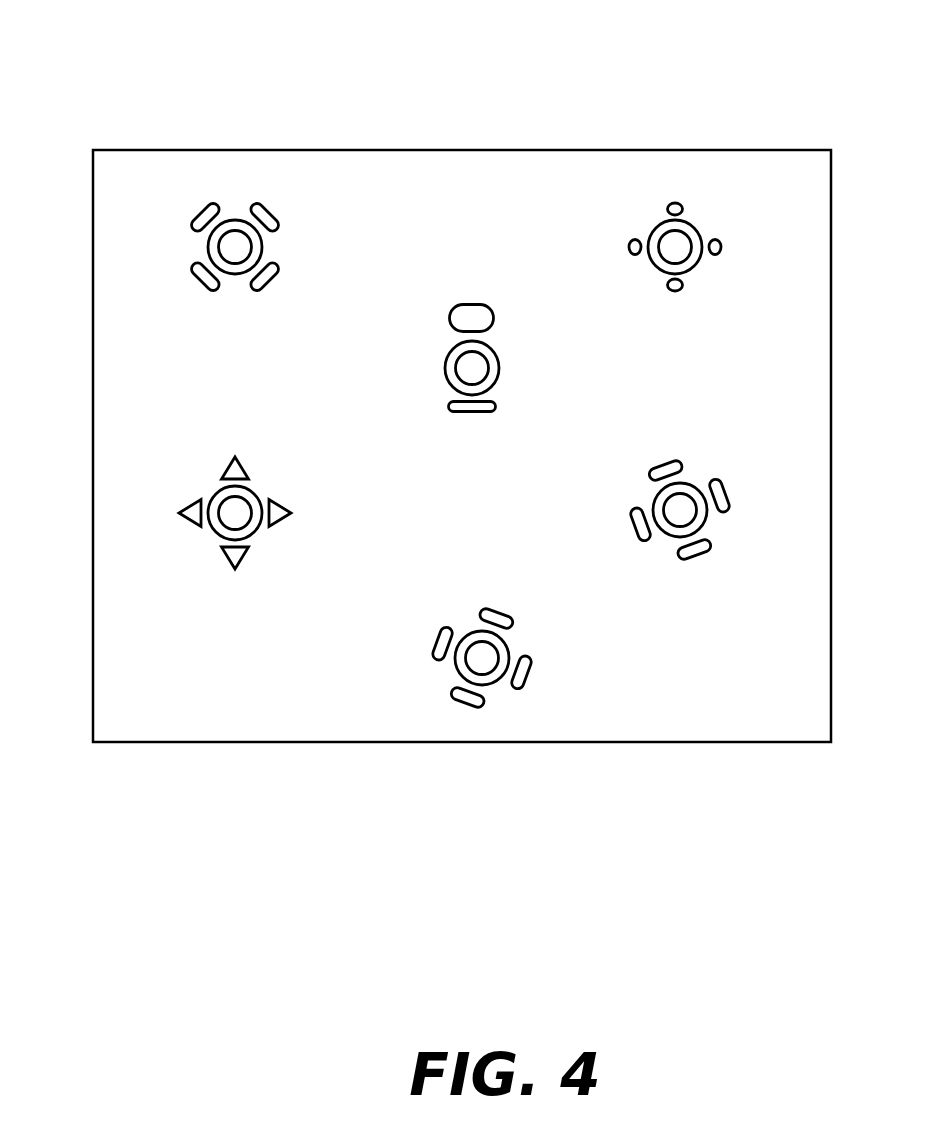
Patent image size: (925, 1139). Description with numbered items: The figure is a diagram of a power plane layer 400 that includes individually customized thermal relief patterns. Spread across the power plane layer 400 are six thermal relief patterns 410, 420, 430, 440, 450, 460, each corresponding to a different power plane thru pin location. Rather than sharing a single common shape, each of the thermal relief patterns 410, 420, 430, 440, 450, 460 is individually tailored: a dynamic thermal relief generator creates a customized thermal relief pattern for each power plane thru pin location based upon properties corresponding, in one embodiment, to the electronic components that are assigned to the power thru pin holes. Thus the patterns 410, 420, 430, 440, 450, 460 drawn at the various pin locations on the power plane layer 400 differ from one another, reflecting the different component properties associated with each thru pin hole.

The power plane layer 400 is at (203, 93).
The thermal relief pattern 410 is at (298, 222).
The thermal relief pattern 420 is at (278, 473).
The thermal relief pattern 430 is at (510, 343).
The thermal relief pattern 440 is at (538, 623).
The thermal relief pattern 450 is at (715, 213).
The thermal relief pattern 460 is at (715, 455).